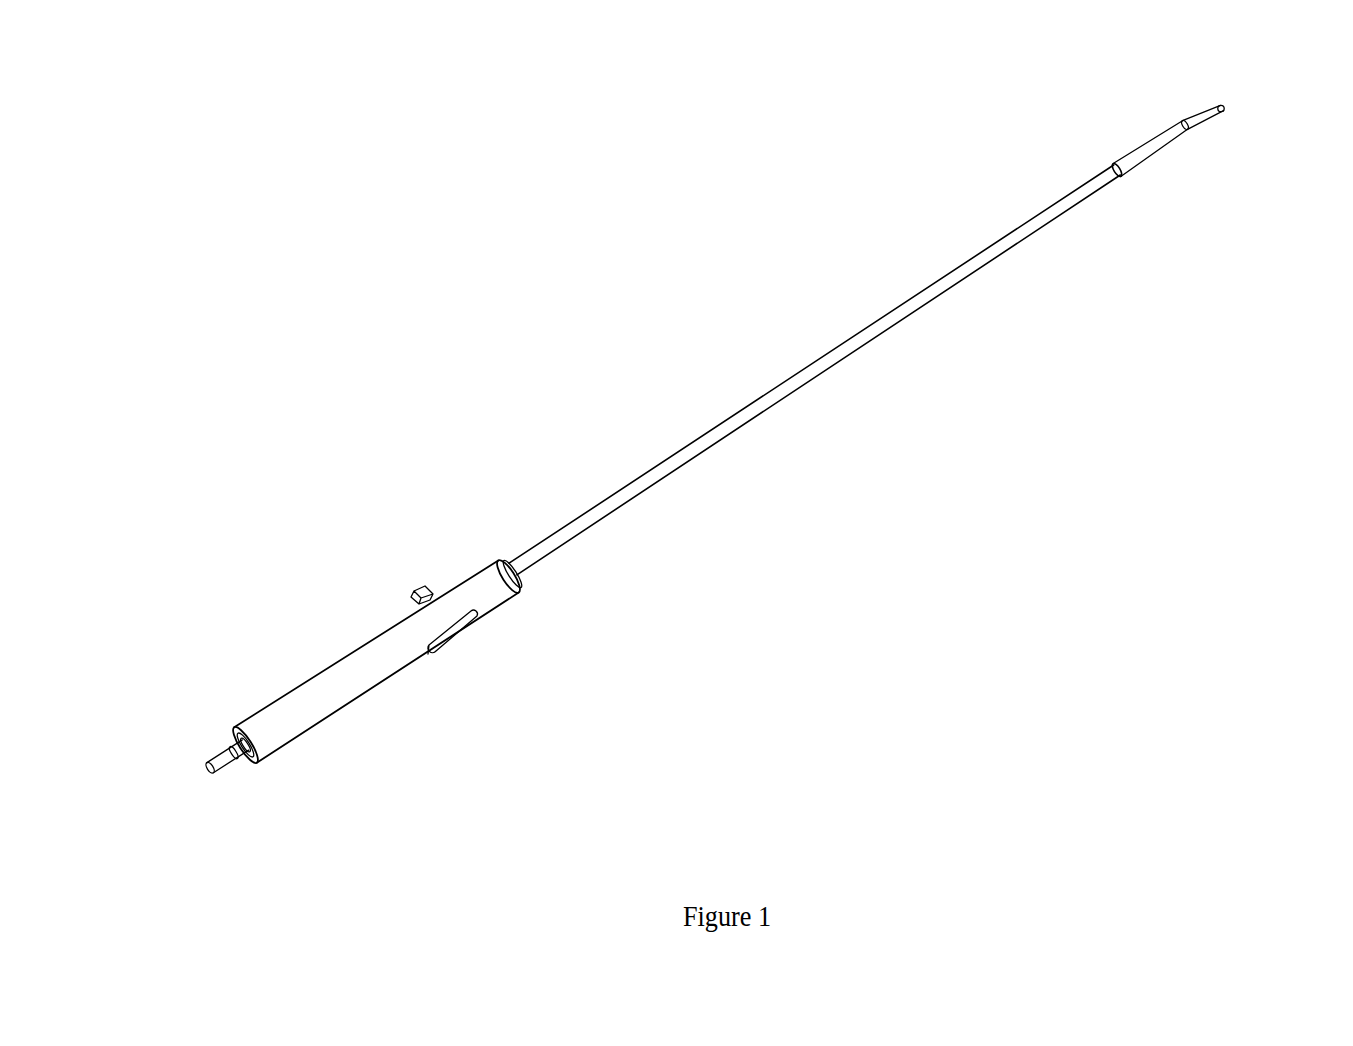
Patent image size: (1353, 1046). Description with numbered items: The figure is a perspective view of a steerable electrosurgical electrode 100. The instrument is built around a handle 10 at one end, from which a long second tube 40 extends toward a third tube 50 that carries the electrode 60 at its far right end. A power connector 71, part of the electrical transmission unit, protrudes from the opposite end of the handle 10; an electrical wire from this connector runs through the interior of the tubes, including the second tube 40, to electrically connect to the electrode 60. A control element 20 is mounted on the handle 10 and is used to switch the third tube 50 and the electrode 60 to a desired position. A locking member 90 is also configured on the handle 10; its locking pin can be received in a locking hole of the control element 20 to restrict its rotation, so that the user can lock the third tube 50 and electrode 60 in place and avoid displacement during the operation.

The steerable electrosurgical electrode 100 is at (434, 377).
The handle 10 is at (328, 690).
The control element 20 is at (416, 590).
The second tube 40 is at (800, 383).
The third tube 50 is at (1150, 152).
The electrode 60 is at (1219, 110).
The power connector 71 is at (228, 768).
The locking member 90 is at (452, 622).